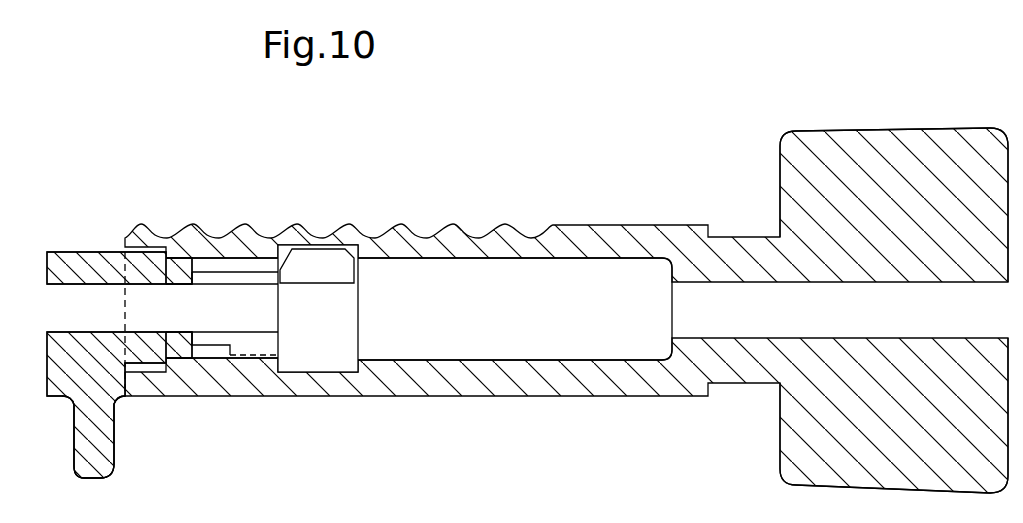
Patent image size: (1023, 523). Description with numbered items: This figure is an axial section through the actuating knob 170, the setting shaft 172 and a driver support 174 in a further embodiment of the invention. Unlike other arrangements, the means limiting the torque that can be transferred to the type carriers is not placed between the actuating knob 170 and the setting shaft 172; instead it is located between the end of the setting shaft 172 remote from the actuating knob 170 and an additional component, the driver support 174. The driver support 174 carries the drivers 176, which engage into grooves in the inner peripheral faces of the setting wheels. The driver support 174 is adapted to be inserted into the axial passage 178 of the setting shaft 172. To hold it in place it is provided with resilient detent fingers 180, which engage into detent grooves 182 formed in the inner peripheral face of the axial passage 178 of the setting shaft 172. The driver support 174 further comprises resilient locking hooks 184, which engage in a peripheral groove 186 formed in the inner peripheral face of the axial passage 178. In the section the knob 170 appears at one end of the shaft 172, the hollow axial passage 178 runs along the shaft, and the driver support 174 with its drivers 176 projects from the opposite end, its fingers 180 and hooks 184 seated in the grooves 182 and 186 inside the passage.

The actuating knob 170 is at (877, 142).
The setting shaft 172 is at (584, 232).
The driver support 174 is at (83, 253).
The drivers 176 is at (103, 455).
The axial passage 178 is at (450, 273).
The resilient detent fingers 180 is at (255, 344).
The detent grooves 182 is at (196, 356).
The resilient locking hooks 184 is at (317, 262).
The peripheral groove 186 is at (357, 250).